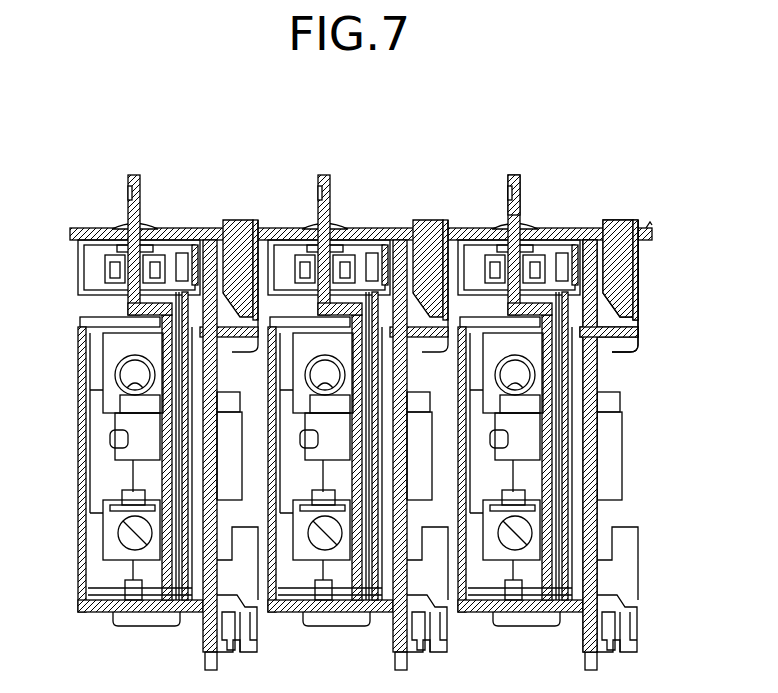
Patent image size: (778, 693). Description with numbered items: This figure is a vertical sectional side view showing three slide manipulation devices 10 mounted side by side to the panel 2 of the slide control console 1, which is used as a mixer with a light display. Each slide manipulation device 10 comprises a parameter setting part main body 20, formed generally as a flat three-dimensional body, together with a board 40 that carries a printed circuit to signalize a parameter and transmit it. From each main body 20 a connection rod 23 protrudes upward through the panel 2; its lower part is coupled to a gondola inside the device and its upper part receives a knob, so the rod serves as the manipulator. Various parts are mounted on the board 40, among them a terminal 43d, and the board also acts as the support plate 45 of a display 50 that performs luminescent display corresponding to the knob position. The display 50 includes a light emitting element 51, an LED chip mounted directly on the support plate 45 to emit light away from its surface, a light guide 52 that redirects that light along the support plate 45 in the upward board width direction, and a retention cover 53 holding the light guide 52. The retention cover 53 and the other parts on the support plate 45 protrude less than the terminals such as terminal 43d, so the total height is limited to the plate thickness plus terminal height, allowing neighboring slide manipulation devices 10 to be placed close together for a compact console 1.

The slide control console 1 is at (264, 169).
The panel 2 is at (472, 228).
The slide manipulation device 10 is at (155, 162).
The parameter setting part main body 20 is at (69, 398).
The connection rod 23 is at (512, 178).
The board 40 is at (230, 378).
The terminal 43d is at (258, 637).
The support plate 45 is at (218, 463).
The display 50 is at (648, 393).
The light emitting element 51 is at (597, 302).
The light guide 52 is at (617, 218).
The retention cover 53 is at (634, 267).